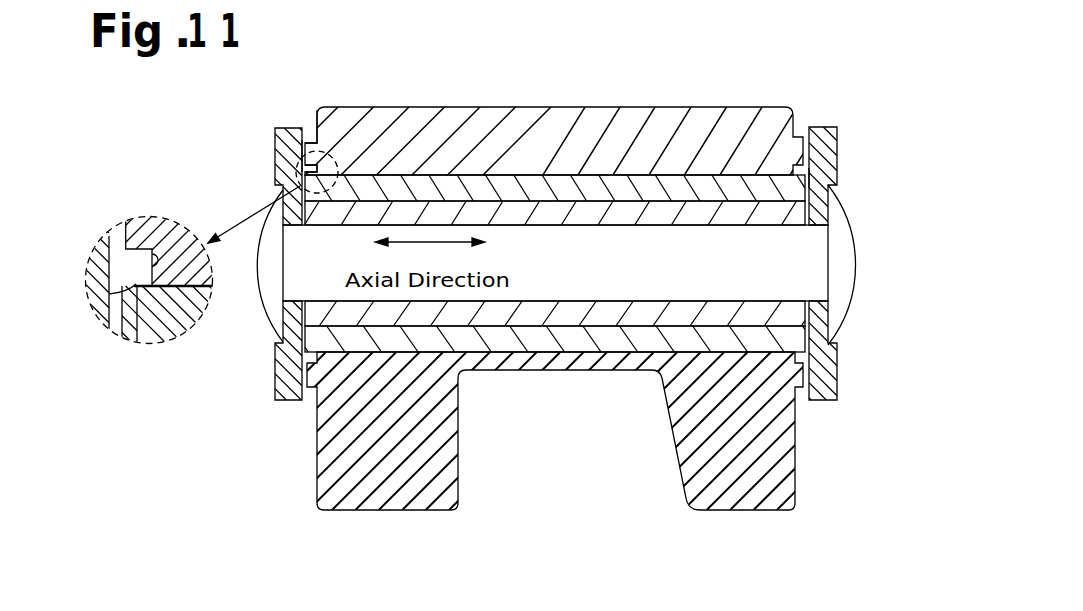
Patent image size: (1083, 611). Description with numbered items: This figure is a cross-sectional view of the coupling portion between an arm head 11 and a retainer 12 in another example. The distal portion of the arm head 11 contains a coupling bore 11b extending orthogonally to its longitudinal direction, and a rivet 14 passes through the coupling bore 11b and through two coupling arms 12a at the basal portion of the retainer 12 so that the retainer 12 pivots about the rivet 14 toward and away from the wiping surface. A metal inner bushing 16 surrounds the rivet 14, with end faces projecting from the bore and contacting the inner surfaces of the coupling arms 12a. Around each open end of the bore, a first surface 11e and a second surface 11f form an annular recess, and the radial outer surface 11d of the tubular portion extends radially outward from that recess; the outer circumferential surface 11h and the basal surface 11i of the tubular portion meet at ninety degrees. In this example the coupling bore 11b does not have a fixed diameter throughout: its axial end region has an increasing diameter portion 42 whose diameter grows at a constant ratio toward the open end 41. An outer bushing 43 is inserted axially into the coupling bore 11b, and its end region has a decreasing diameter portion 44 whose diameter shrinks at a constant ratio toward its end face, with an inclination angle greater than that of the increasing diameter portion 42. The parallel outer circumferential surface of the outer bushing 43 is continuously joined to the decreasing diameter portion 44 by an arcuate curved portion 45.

The arm head 11 is at (485, 108).
The coupling bore 11b is at (430, 183).
The outer surface 11d is at (300, 155).
The first surface 11e is at (172, 223).
The second surface 11f is at (304, 167).
The outer circumferential surface 11h is at (314, 140).
The basal surface 11i is at (318, 134).
The retainer 12 is at (837, 147).
The coupling arms 12a is at (837, 380).
The rivet 14 is at (855, 265).
The inner bushing 16 is at (608, 310).
The open end 41 is at (147, 275).
The increasing diameter portion 42 is at (187, 327).
The outer bushing 43 is at (585, 182).
The decreasing diameter portion 44 is at (815, 176).
The curved portion 45 is at (142, 335).